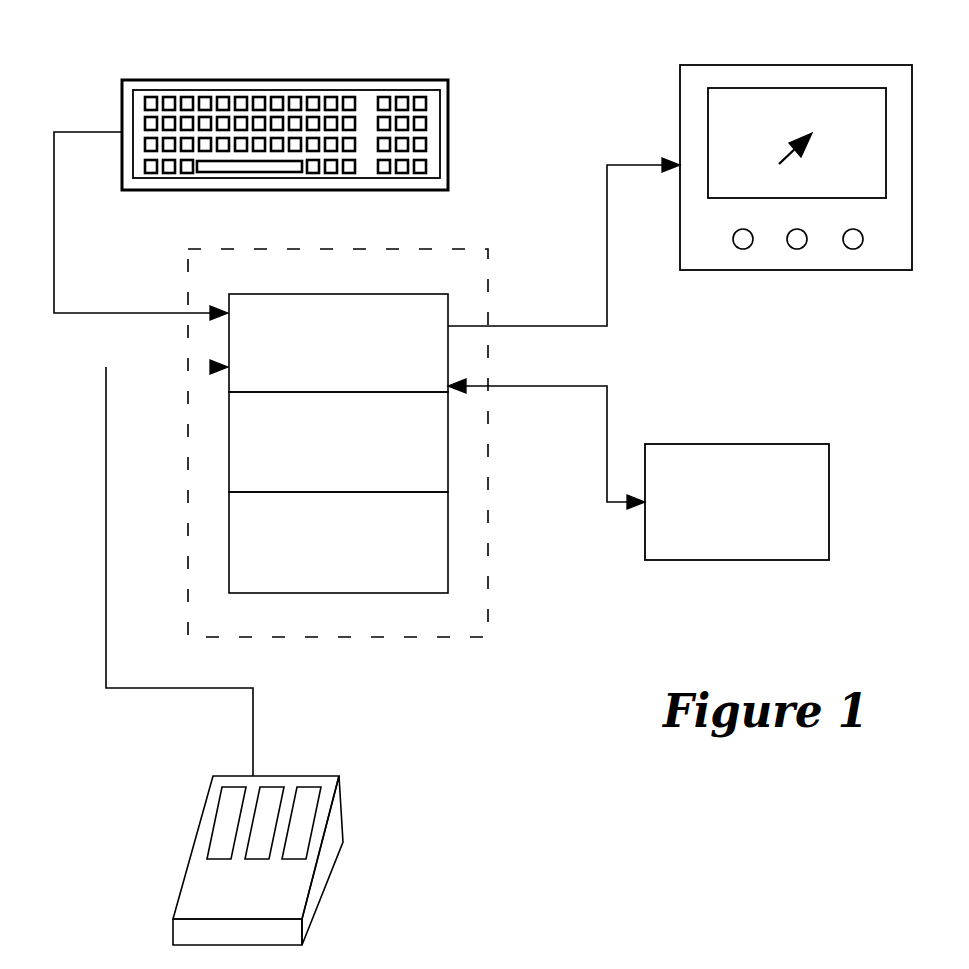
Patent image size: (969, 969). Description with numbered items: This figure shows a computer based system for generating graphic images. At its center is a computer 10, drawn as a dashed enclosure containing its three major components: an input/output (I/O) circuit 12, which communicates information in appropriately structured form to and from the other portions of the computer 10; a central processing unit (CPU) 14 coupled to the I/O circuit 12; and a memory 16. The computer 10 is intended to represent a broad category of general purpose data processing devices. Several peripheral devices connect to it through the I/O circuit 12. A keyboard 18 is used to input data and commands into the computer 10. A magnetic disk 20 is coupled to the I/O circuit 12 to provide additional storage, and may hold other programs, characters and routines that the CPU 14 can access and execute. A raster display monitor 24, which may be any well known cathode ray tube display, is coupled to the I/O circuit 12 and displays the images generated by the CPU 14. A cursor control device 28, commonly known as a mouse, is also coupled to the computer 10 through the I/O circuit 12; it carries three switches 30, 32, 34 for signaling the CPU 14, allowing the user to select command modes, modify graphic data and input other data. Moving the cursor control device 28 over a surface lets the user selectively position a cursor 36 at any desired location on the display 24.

The computer 10 is at (447, 249).
The input/output (I/O) circuit 12 is at (246, 304).
The central processing unit (CPU) 14 is at (428, 471).
The memory 16 is at (424, 556).
The keyboard 18 is at (448, 130).
The magnetic disk 20 is at (793, 516).
The raster display monitor 24 is at (746, 270).
The cursor control device 28 is at (291, 652).
The switch 30 is at (223, 843).
The switch 32 is at (267, 814).
The switch 34 is at (303, 808).
The cursor 36 is at (782, 158).